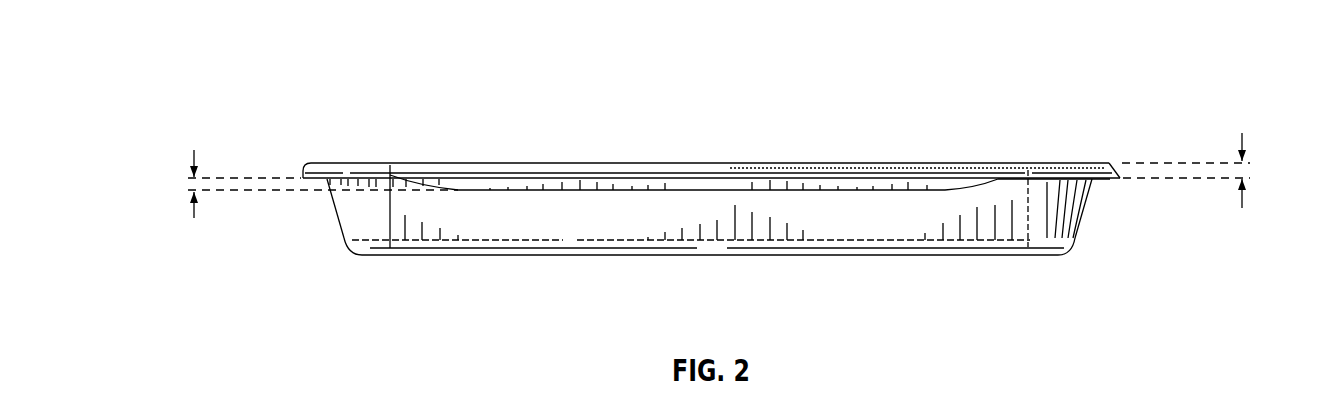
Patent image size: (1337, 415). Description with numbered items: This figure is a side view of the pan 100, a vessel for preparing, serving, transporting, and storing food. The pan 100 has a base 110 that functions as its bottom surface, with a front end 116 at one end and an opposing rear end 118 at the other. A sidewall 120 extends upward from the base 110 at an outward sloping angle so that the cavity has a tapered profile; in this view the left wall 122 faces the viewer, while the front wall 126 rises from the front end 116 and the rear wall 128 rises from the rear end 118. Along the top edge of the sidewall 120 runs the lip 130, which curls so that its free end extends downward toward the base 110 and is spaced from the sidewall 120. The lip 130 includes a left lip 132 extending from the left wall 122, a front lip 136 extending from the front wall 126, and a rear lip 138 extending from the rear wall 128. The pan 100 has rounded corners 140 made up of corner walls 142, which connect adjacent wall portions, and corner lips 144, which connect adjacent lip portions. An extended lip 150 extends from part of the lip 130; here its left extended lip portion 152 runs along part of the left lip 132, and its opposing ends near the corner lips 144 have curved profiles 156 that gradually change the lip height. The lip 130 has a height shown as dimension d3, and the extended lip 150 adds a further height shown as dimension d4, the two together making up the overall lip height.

The pan 100 is at (250, 41).
The base 110 is at (877, 256).
The front end 116 is at (1110, 216).
The rear end 118 is at (298, 203).
The sidewall 120 is at (598, 222).
The left wall 122 is at (467, 218).
The front wall 126 is at (1080, 237).
The rear wall 128 is at (335, 223).
The lip 130 is at (1020, 160).
The left lip 132 is at (868, 163).
The front lip 136 is at (1118, 178).
The rear lip 138 is at (305, 173).
The corners 140 is at (344, 243).
The corner walls 142 is at (367, 217).
The corner lips 144 is at (354, 169).
The extended lip 150 is at (723, 205).
The left extended lip portion 152 is at (828, 189).
The curved profiles 156 is at (414, 177).
The dimension d3 is at (1245, 156).
The dimension d4 is at (192, 158).